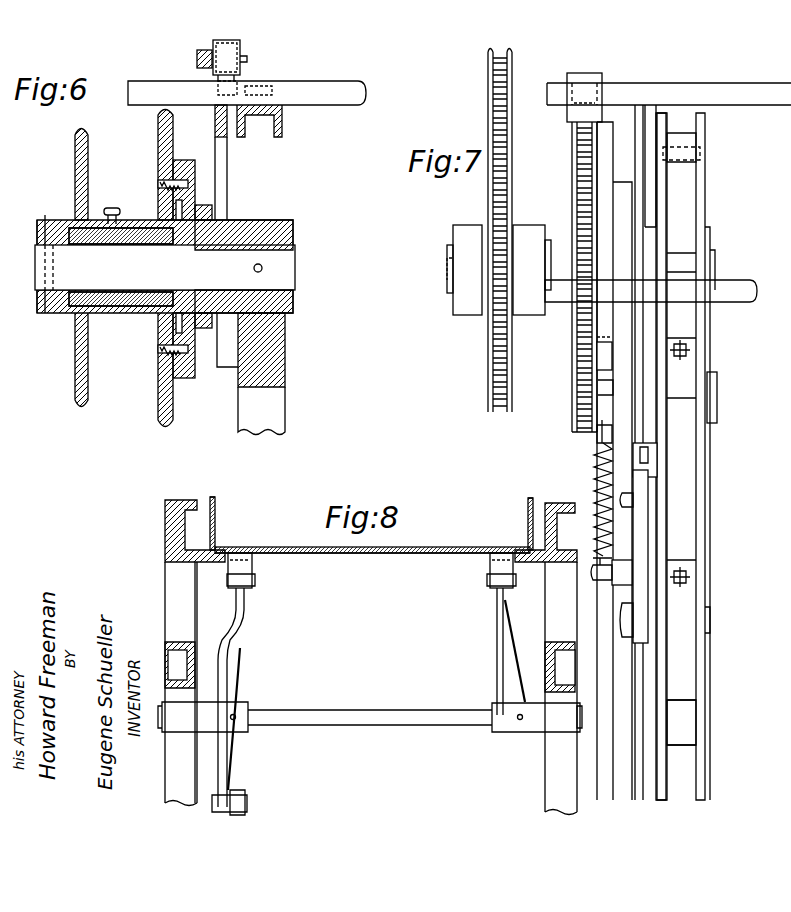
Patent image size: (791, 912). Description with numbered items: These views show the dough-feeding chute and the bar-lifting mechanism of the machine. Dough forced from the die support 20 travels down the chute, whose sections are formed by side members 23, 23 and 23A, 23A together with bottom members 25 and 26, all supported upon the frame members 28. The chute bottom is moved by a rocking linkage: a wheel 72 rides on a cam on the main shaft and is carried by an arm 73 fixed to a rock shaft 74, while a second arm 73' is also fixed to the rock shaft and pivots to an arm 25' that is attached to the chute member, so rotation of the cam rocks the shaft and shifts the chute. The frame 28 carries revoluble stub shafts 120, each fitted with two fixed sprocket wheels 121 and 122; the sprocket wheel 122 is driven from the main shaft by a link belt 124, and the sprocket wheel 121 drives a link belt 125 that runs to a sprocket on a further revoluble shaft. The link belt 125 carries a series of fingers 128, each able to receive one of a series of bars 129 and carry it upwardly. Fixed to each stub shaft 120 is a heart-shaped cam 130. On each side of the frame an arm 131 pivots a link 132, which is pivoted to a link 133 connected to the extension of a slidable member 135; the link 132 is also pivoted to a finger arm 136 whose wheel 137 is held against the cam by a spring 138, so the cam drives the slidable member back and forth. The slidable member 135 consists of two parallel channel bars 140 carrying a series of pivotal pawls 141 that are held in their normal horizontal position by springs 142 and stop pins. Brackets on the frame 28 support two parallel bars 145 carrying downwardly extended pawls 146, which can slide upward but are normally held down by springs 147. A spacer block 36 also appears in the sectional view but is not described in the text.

In FIG. 8, the die support 20 is at (345, 553).
In FIG. 8, the side members 23 is at (215, 520).
In FIG. 8, the side members 23A is at (212, 497).
In FIG. 8, the bottom member 25 is at (254, 570).
In FIG. 8, the arm 25' is at (481, 570).
In FIG. 8, the bottom member 26 is at (390, 553).
In FIG. 6, the frame members 28 is at (285, 362).
In FIG. 8, the frame members 28 is at (577, 762).
In FIG. 6, the spacer block 36 is at (212, 213).
In FIG. 8, the wheel 72 is at (232, 790).
In FIG. 8, the arm 73 is at (244, 697).
In FIG. 8, the arm 73' is at (489, 651).
In FIG. 8, the rock shaft 74 is at (363, 710).
In FIG. 6, the stub shaft 120 is at (37, 255).
In FIG. 7, the stub shaft 120 is at (447, 276).
In FIG. 6, the sprocket wheel 121 is at (75, 152).
In FIG. 7, the sprocket wheel 121 is at (460, 225).
In FIG. 6, the sprocket wheel 122 is at (158, 122).
In FIG. 7, the sprocket wheel 122 is at (560, 235).
In FIG. 7, the link belt 124 is at (488, 96).
In FIG. 7, the link belt 125 is at (572, 150).
In FIG. 7, the fingers 128 is at (567, 116).
In FIG. 6, the bars 129 is at (347, 81).
In FIG. 7, the bars 129 is at (722, 83).
In FIG. 6, the heart-shaped cam 130 is at (195, 170).
In FIG. 7, the heart-shaped cam 130 is at (612, 132).
In FIG. 7, the arm 131 is at (678, 638).
In FIG. 7, the link 132 is at (640, 537).
In FIG. 7, the link 133 is at (650, 468).
In FIG. 7, the slidable member 135 is at (685, 435).
In FIG. 7, the finger arm 136 is at (617, 388).
In FIG. 7, the wheel 137 is at (600, 358).
In FIG. 7, the spring 138 is at (595, 470).
In FIG. 6, the channel bars 140 is at (282, 128).
In FIG. 7, the channel bars 140 is at (656, 670).
In FIG. 6, the pivotal pawls 141 is at (262, 86).
In FIG. 7, the pivotal pawls 141 is at (688, 322).
In FIG. 7, the springs 142 is at (690, 350).
In FIG. 6, the parallel bars 145 is at (197, 56).
In FIG. 6, the downwardly extended pawls 146 is at (218, 88).
In FIG. 6, the springs 147 is at (246, 56).